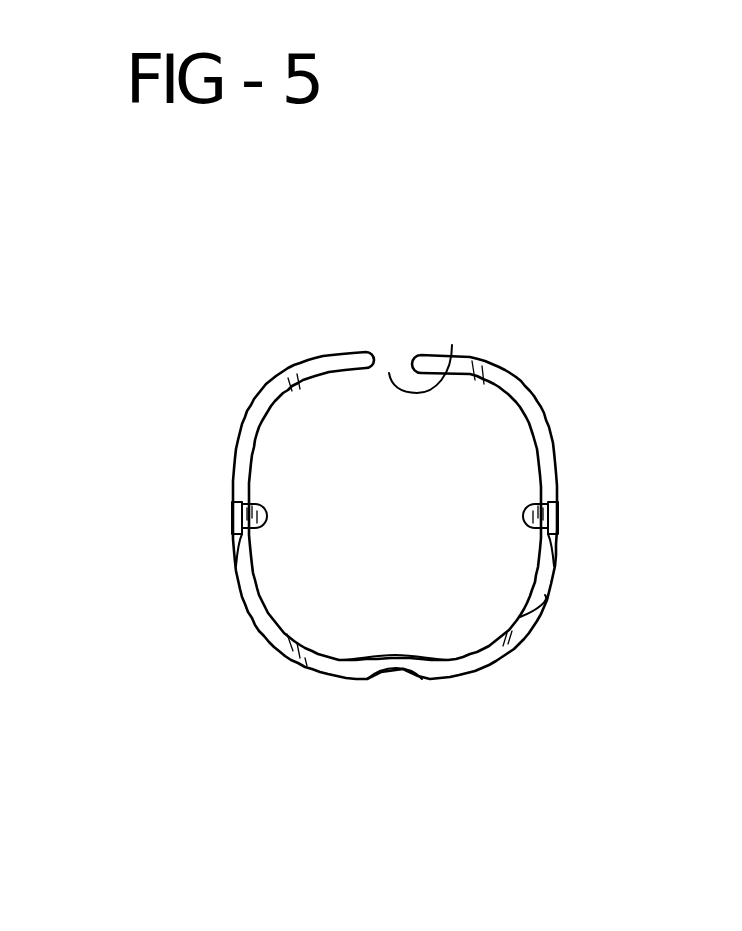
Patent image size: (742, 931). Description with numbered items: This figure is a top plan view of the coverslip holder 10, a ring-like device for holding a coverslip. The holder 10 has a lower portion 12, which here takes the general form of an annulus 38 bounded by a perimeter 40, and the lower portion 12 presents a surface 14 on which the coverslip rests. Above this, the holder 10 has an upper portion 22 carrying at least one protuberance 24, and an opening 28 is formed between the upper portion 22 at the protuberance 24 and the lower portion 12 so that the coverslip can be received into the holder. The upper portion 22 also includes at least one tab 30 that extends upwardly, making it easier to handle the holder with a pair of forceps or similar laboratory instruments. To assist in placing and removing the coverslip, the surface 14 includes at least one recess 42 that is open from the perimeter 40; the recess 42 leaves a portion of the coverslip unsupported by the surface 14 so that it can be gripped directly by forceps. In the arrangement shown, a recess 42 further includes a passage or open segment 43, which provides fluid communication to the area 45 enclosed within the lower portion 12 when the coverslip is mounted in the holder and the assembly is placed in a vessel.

The coverslip holder 10 is at (234, 346).
The lower portion 12 is at (303, 668).
The surface 14 is at (520, 617).
The upper portion 22 is at (558, 568).
The protuberance 24 is at (542, 502).
The opening 28 is at (232, 572).
The tab 30 is at (558, 514).
The annulus 38 is at (490, 668).
The perimeter 40 is at (500, 375).
The recess 42 is at (397, 740).
The open segment 43 is at (452, 345).
The area 45 is at (348, 437).